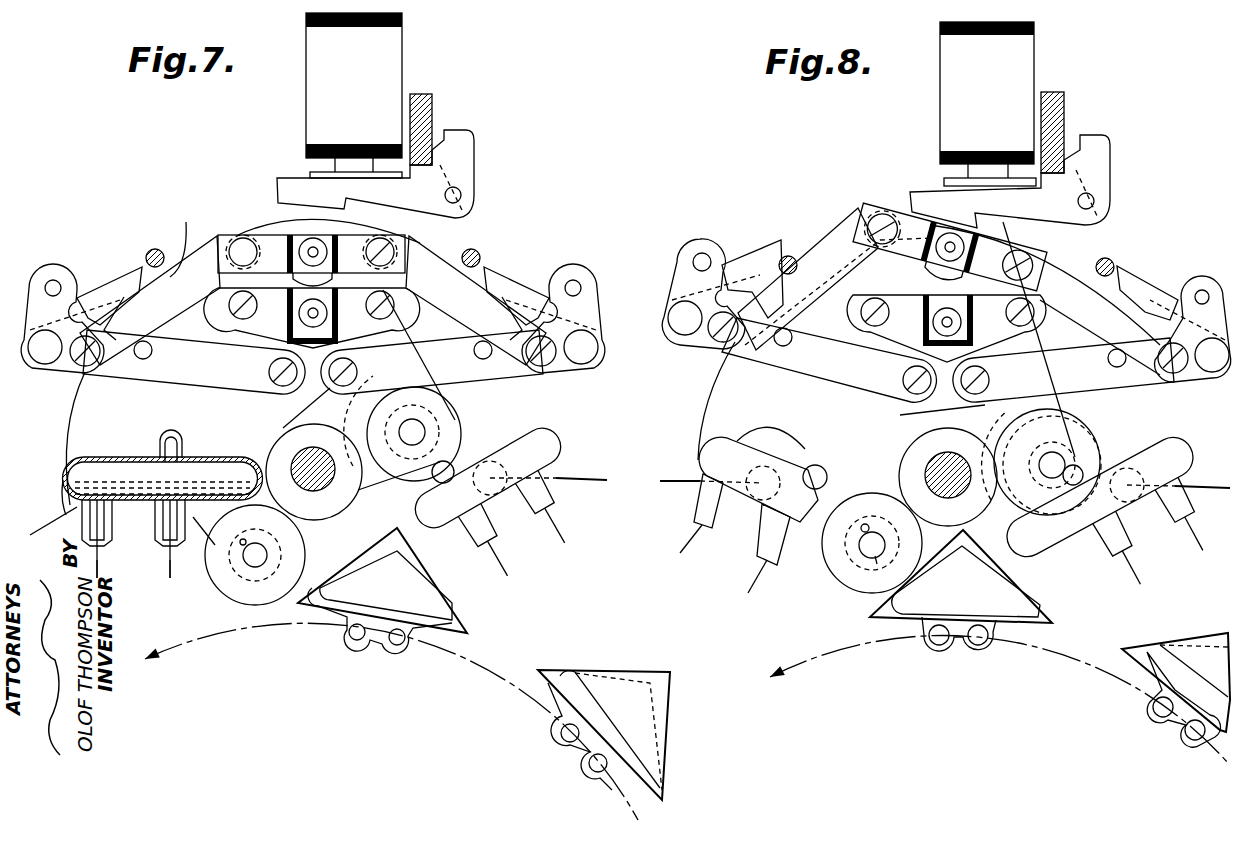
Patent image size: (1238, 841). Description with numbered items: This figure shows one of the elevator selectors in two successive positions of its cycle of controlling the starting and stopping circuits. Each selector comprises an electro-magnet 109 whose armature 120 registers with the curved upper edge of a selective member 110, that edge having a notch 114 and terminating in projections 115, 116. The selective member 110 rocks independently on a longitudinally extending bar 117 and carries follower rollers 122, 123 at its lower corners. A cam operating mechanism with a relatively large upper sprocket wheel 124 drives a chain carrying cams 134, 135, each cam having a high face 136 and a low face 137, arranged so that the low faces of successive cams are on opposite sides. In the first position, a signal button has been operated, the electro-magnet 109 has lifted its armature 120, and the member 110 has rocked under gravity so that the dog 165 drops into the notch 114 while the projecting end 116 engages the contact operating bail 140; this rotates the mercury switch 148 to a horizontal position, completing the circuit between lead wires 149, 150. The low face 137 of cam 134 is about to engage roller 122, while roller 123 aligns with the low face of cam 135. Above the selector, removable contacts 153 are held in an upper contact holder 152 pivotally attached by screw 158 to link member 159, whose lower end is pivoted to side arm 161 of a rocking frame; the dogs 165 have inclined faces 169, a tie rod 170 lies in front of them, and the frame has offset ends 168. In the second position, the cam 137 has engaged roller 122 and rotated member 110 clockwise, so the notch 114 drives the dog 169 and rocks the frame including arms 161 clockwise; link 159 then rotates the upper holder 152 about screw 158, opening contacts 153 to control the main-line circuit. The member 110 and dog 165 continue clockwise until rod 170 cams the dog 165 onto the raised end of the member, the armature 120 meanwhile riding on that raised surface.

In FIG. 7, the electro-magnet 109 is at (354, 95).
In FIG. 8, the electro-magnet 109 is at (988, 104).
In FIG. 7, the armature 120 is at (290, 190).
In FIG. 8, the armature 120 is at (912, 192).
In FIG. 7, the upper contact holder 152 is at (275, 247).
In FIG. 7, the contact switch 153 is at (322, 270).
In FIG. 8, the contact switch 153 is at (935, 300).
In FIG. 7, the notch 114 is at (95, 360).
In FIG. 7, the projection 115 is at (425, 256).
In FIG. 8, the projection 115 is at (1134, 263).
In FIG. 7, the tie rod 170 is at (152, 250).
In FIG. 8, the tie rod 170 is at (790, 256).
In FIG. 7, the inclined face 169 is at (187, 236).
In FIG. 8, the inclined face 169 is at (773, 285).
In FIG. 7, the offset end 168 is at (42, 266).
In FIG. 8, the offset end 168 is at (698, 242).
In FIG. 7, the dog 165 is at (90, 290).
In FIG. 8, the dog 165 is at (743, 258).
In FIG. 7, the link member 159 is at (150, 300).
In FIG. 7, the screw 158 is at (395, 265).
In FIG. 7, the side arm 161 is at (222, 372).
In FIG. 8, the side arm 161 is at (785, 358).
In FIG. 7, the selective member 110 is at (62, 414).
In FIG. 8, the selective member 110 is at (694, 386).
In FIG. 7, the bar 117 is at (318, 478).
In FIG. 8, the bar 117 is at (948, 465).
In FIG. 7, the follower roller 123 is at (462, 428).
In FIG. 8, the follower roller 123 is at (1041, 462).
In FIG. 7, the follower roller 122 is at (222, 590).
In FIG. 8, the follower roller 122 is at (872, 543).
In FIG. 7, the mercury switch member 148 is at (205, 457).
In FIG. 7, the contact operating bail 140 is at (592, 478).
In FIG. 8, the contact operating bail 140 is at (945, 484).
In FIG. 7, the projection 116 is at (63, 507).
In FIG. 8, the projection 116 is at (785, 438).
In FIG. 7, the lead wire 149 is at (99, 567).
In FIG. 7, the lead wire 150 is at (170, 578).
In FIG. 7, the high face 136 is at (435, 572).
In FIG. 8, the high face 136 is at (1008, 567).
In FIG. 7, the low face 137 is at (430, 592).
In FIG. 8, the low face 137 is at (985, 555).
In FIG. 7, the cam 134 is at (338, 605).
In FIG. 8, the cam 134 is at (1071, 682).
In FIG. 7, the cam 135 is at (560, 710).
In FIG. 7, the upper sprocket wheel 124 is at (207, 640).
In FIG. 8, the upper sprocket wheel 124 is at (870, 620).